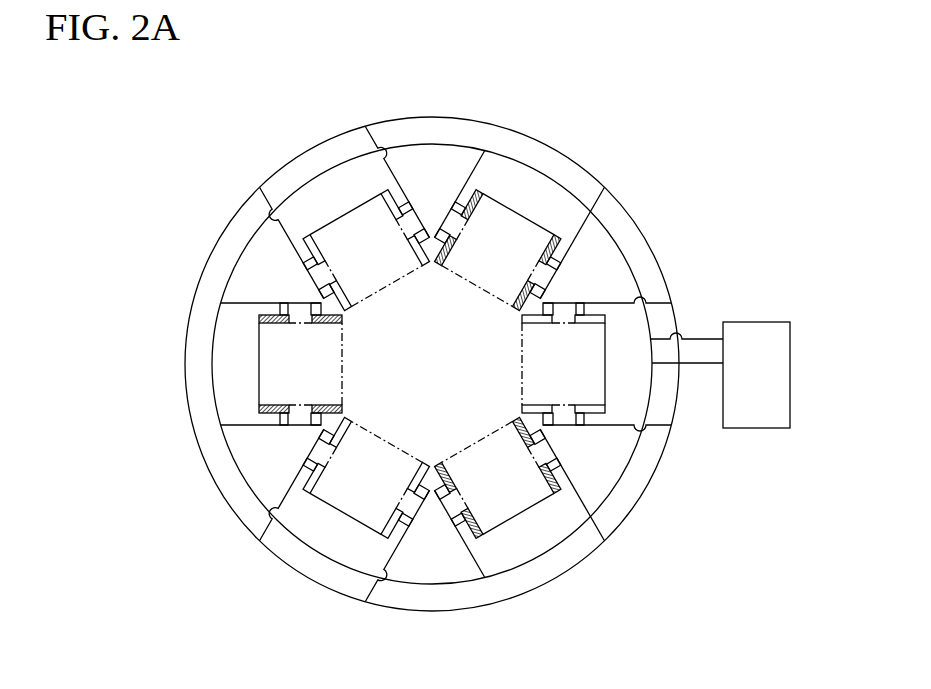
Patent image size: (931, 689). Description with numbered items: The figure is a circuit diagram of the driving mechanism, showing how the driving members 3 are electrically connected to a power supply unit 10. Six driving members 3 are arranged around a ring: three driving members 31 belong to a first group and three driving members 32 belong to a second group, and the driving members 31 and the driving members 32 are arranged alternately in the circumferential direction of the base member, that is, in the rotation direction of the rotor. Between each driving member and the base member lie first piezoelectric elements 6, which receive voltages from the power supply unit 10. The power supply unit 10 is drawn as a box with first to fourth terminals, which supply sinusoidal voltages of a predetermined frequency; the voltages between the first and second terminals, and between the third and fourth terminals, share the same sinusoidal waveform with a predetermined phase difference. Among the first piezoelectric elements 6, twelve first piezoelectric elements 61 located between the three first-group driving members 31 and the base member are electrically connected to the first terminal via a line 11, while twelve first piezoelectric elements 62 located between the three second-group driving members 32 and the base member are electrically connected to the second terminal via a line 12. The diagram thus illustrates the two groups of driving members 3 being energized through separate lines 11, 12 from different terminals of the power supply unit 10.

The driving member 3 is at (427, 378).
The first piezoelectric element 6 is at (430, 372).
The power supply unit 10 is at (770, 322).
The line 11 is at (630, 257).
The line 12 is at (640, 497).
The driving member 31 is at (515, 210).
The driving member 32 is at (337, 213).
The first piezoelectric element 61 is at (464, 197).
The first piezoelectric element 62 is at (307, 477).